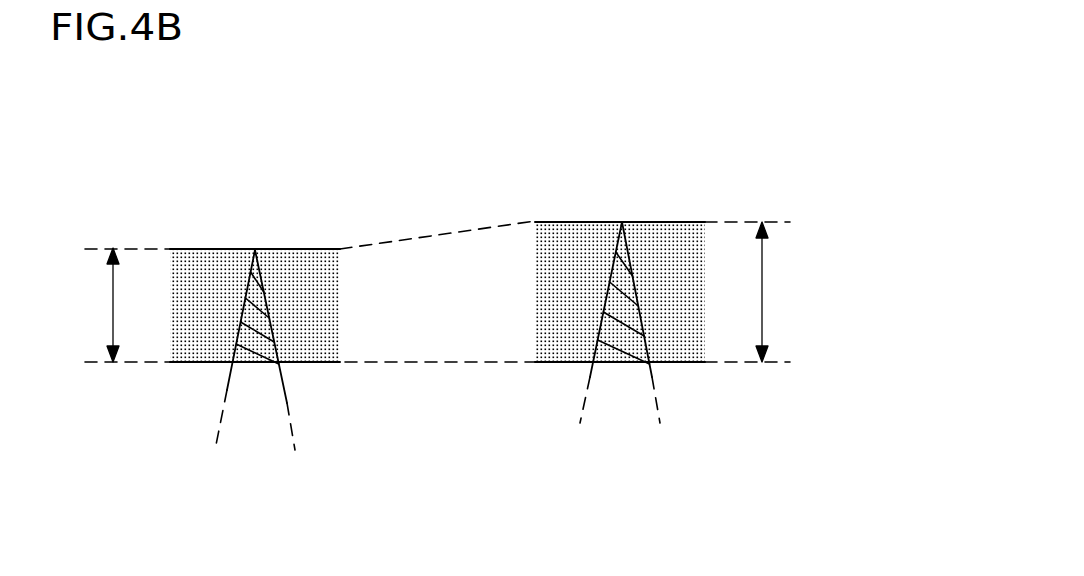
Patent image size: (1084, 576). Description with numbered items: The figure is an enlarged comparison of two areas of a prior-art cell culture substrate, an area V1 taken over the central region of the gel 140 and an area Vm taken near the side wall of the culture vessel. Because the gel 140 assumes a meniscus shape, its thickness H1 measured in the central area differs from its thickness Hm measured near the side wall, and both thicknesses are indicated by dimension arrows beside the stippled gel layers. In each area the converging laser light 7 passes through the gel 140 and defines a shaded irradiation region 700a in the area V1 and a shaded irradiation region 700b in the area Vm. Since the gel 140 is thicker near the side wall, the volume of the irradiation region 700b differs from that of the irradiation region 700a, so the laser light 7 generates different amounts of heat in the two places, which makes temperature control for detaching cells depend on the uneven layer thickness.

The gel 140 is at (547, 303).
The irradiation region 700a is at (255, 287).
The irradiation region 700b is at (622, 238).
The laser light 7 is at (227, 392).
The area V1 is at (310, 167).
The area Vm is at (707, 167).
The thickness H1 is at (95, 305).
The thickness Hm is at (780, 292).